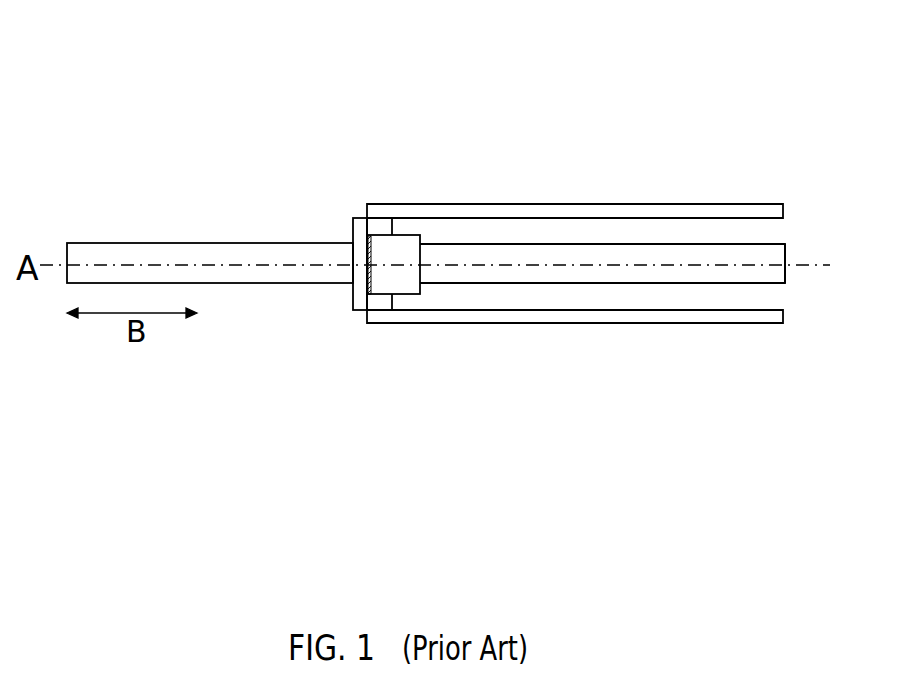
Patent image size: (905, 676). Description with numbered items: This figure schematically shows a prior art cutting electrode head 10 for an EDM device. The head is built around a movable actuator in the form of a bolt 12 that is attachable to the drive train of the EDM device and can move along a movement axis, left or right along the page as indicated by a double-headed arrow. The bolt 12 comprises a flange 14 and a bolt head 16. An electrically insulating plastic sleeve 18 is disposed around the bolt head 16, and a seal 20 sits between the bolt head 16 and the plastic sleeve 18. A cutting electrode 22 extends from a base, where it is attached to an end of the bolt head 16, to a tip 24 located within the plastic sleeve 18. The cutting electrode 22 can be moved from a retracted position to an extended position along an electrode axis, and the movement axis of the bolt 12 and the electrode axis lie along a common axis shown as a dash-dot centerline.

The cutting electrode head 10 is at (183, 91).
The bolt 12 is at (107, 252).
The flange 14 is at (351, 232).
The bolt head 16 is at (405, 284).
The plastic sleeve 18 is at (471, 216).
The seal 20 is at (380, 302).
The cutting electrode 22 is at (772, 252).
The tip 24 is at (786, 280).